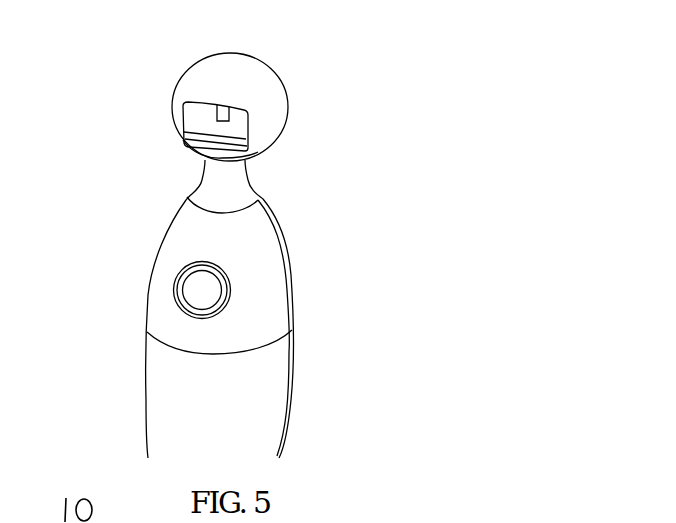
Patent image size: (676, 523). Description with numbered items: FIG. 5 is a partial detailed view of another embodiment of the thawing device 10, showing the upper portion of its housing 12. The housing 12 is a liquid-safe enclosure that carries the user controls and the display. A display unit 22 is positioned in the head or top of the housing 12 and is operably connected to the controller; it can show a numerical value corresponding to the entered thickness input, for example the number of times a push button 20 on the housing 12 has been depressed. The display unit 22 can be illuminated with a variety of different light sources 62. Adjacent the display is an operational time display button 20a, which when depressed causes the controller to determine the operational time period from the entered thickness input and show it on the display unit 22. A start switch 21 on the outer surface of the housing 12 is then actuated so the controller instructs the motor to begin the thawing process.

The device 10 is at (523, 98).
The housing 12 is at (150, 314).
The push button 20 is at (185, 143).
The operational time display button 20a is at (258, 152).
The start switch 21 is at (207, 292).
The display unit 22 is at (232, 127).
The light sources 62 is at (220, 112).